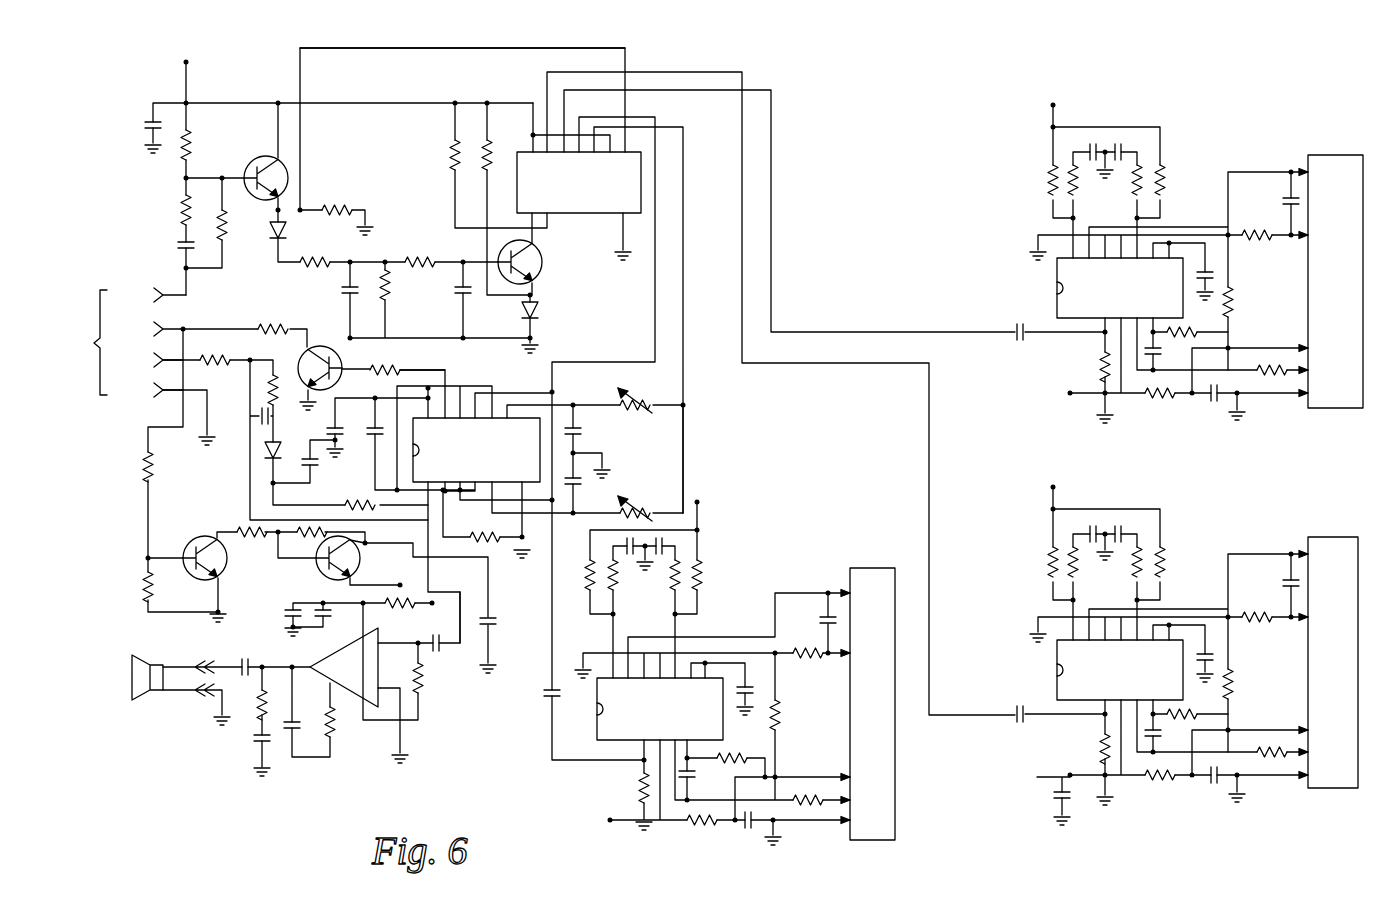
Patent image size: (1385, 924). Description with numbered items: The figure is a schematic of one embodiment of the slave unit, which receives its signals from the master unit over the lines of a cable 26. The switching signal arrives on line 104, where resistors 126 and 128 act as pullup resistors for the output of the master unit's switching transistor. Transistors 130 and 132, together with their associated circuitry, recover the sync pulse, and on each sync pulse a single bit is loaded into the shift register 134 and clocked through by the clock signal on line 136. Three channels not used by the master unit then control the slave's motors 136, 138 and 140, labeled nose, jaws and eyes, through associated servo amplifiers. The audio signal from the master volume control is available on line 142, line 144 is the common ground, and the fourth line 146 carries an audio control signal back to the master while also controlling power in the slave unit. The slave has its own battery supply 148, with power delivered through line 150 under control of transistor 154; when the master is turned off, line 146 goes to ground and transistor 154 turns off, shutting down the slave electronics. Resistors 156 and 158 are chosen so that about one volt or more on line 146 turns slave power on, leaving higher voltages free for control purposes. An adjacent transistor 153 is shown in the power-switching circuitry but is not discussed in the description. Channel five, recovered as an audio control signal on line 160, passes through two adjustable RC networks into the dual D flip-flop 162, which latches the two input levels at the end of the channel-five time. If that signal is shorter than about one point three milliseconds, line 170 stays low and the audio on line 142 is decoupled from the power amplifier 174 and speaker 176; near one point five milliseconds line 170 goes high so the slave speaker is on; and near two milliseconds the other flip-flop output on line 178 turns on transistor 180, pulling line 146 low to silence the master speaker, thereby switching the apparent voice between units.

The cable 26 is at (97, 345).
The line 104 is at (178, 277).
The resistor 126 is at (186, 132).
The resistor 128 is at (222, 245).
The transistor 130 is at (253, 160).
The transistor 132 is at (540, 272).
The shift register 134 is at (641, 193).
The clock signal line and nose motor 136 is at (468, 48).
The motor 138 is at (1346, 538).
The motor 140 is at (885, 568).
The line 142 is at (167, 362).
The common ground line 144 is at (167, 392).
The line 146 is at (222, 329).
The battery supply 148 is at (497, 625).
The line 150 is at (355, 582).
The transistor 153 is at (318, 577).
The transistor 154 is at (215, 535).
The resistor 156 is at (145, 465).
The resistor 158 is at (145, 577).
The line 160 is at (688, 425).
The dual D flip-flop 162 is at (462, 418).
The line 170 is at (308, 503).
The power amplifier 174 is at (358, 690).
The speaker 176 is at (137, 702).
The line 178 is at (410, 371).
The transistor 180 is at (322, 346).